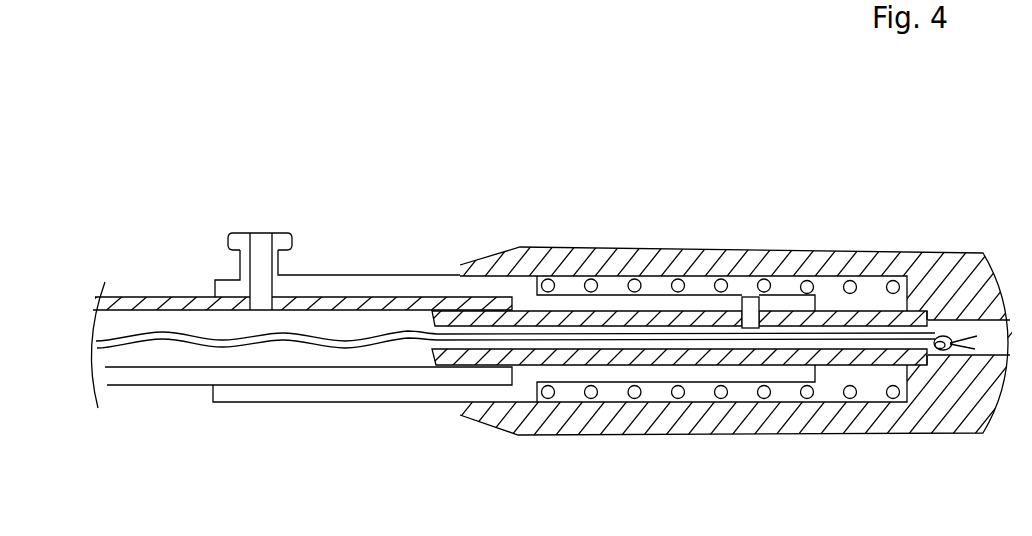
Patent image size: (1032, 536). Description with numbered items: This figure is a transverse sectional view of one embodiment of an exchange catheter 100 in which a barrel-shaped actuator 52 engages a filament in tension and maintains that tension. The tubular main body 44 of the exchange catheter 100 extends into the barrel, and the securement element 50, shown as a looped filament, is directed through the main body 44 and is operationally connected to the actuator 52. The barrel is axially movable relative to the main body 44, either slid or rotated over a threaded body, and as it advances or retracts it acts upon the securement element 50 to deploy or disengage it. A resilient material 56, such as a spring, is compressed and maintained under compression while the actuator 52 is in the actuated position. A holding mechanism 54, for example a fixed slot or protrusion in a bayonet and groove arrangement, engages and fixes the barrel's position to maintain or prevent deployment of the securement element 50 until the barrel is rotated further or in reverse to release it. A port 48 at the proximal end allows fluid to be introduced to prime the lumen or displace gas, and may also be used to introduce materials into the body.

The exchange catheter 100 is at (136, 231).
The main body 44 is at (153, 387).
The port 48 is at (272, 233).
The securement element 50 is at (395, 336).
The actuator 52 is at (735, 433).
The holding mechanism 54 is at (743, 297).
The resilient material 56 is at (680, 278).